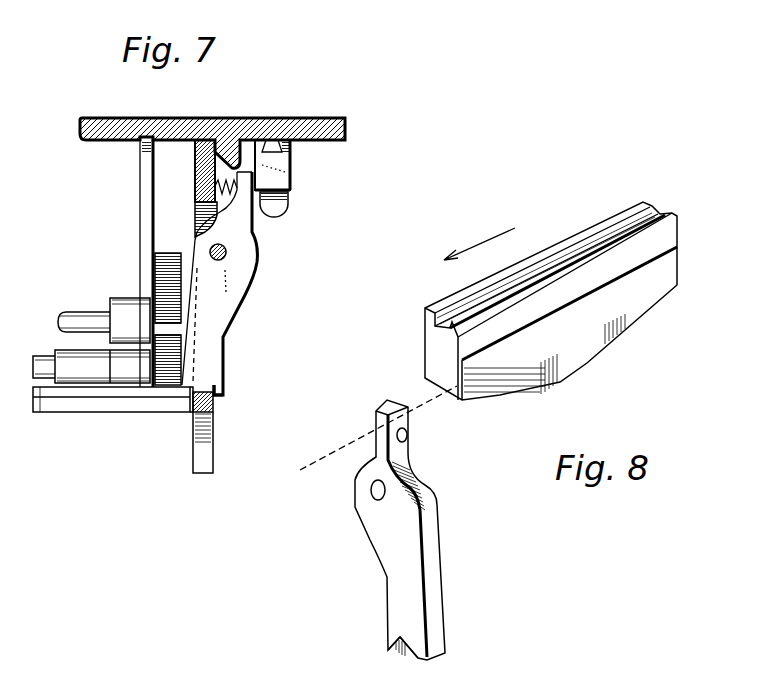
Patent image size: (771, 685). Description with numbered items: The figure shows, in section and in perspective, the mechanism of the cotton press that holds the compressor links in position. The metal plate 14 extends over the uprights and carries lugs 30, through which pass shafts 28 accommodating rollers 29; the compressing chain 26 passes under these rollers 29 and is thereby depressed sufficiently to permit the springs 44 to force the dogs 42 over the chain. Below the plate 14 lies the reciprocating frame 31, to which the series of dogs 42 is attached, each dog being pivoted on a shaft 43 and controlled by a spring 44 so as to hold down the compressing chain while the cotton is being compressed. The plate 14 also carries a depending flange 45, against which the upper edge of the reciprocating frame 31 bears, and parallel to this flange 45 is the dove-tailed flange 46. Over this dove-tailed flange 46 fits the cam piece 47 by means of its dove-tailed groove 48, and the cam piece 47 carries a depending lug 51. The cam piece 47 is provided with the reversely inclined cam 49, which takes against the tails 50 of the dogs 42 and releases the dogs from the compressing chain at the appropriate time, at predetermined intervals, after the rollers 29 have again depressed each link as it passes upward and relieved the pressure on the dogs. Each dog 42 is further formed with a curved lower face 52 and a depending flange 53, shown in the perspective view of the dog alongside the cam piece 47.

In FIG. 7, the metal plate 14 is at (343, 121).
In FIG. 7, the compressing chain 26 is at (100, 405).
In FIG. 7, the shaft 28 is at (77, 315).
In FIG. 7, the roller 29 is at (165, 303).
In FIG. 7, the lug 30 is at (143, 233).
In FIG. 7, the reciprocating frame 31 is at (215, 408).
In FIG. 7, the dog 42 is at (218, 303).
In FIG. 7, the shaft 43 is at (226, 252).
In FIG. 7, the spring 44 is at (213, 197).
In FIG. 7, the depending flange 45 is at (212, 153).
In FIG. 7, the dove-tailed flange 46 is at (272, 146).
In FIG. 8, the cam piece 47 is at (433, 348).
In FIG. 8, the dove-tailed groove 48 is at (647, 220).
In FIG. 7, the reversely inclined cam 49 is at (244, 168).
In FIG. 8, the reversely inclined cam 49 is at (582, 351).
In FIG. 8, the tail 50 is at (406, 418).
In FIG. 7, the depending lug 51 is at (279, 216).
In FIG. 7, the curved lower face 52 is at (188, 411).
In FIG. 8, the curved lower face 52 is at (418, 650).
In FIG. 7, the depending flange 53 is at (227, 393).
In FIG. 8, the depending flange 53 is at (387, 647).